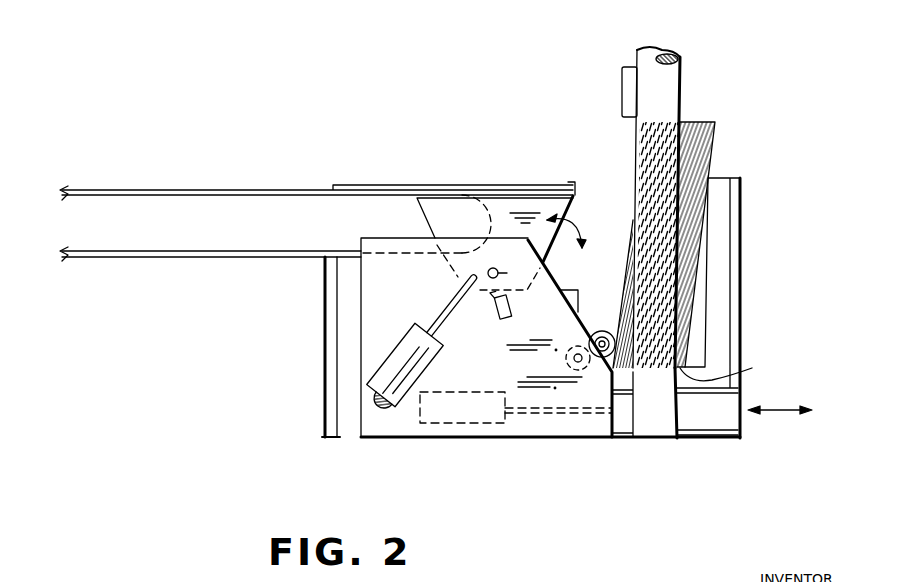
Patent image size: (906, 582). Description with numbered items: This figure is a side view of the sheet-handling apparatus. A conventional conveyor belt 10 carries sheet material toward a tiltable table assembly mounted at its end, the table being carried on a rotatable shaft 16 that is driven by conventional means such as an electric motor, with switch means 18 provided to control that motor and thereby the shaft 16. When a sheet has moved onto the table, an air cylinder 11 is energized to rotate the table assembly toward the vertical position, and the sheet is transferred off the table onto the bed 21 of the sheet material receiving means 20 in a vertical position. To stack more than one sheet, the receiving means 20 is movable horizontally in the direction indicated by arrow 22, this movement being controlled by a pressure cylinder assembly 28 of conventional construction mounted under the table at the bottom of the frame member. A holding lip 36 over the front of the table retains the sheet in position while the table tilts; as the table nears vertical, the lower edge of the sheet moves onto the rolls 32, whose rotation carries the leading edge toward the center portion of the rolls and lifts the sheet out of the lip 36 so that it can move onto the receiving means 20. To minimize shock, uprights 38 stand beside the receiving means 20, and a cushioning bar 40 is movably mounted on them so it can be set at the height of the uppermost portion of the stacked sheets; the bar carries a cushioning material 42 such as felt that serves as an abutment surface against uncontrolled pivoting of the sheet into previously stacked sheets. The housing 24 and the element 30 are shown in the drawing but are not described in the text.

The conveyor belt 10 is at (248, 156).
The air cylinder 11 is at (405, 352).
The rotatable shaft 16 is at (492, 268).
The switch means 18 is at (512, 305).
The sheet material receiving means 20 is at (744, 297).
The bed 21 is at (734, 373).
The arrow 22 is at (785, 408).
The housing 24 is at (569, 288).
The pressure cylinder assembly 28 is at (452, 400).
The conveyor 30 is at (557, 412).
The rolls 32 is at (606, 330).
The holding lip 36 is at (578, 185).
The uprights 38 is at (679, 80).
The cushioning bar 40 is at (632, 68).
The cushioning material 42 is at (620, 93).